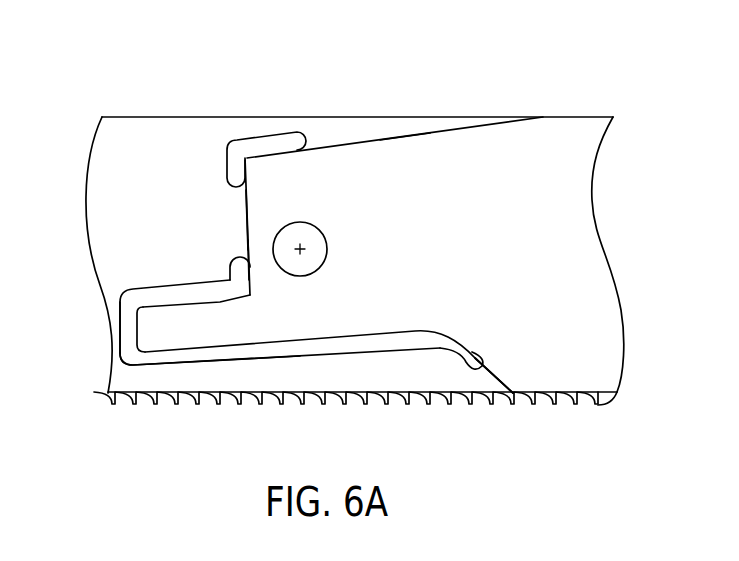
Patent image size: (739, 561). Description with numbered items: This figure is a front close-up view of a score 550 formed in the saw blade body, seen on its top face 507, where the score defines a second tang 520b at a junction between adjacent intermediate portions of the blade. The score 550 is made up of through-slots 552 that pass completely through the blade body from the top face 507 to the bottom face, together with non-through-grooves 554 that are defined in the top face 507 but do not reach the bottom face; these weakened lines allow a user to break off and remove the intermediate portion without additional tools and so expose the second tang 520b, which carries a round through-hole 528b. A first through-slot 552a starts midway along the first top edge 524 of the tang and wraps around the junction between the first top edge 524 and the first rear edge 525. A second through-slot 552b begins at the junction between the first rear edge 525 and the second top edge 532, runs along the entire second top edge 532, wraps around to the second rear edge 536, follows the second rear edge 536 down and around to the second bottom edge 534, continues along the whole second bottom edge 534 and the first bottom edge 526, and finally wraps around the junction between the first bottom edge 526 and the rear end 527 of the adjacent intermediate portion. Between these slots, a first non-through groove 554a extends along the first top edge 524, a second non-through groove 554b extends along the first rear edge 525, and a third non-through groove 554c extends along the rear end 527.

The top face 507 is at (542, 239).
The second tang 520b is at (502, 172).
The first top edge 524 is at (327, 147).
The first rear edge 525 is at (245, 226).
The first bottom edge 526 is at (342, 338).
The rear end 527 is at (468, 352).
The round through-hole 528b is at (327, 243).
The second top edge 532 is at (220, 302).
The second bottom edge 534 is at (157, 360).
The second rear edge 536 is at (135, 333).
The score 550 is at (445, 130).
The through-slots 552 is at (280, 142).
The first through-slot 552a is at (237, 150).
The second through-slot 552b is at (135, 357).
The non-through-grooves 554 is at (365, 137).
The first non-through groove 554a is at (405, 127).
The second non-through groove 554b is at (246, 243).
The third non-through groove 554c is at (503, 387).